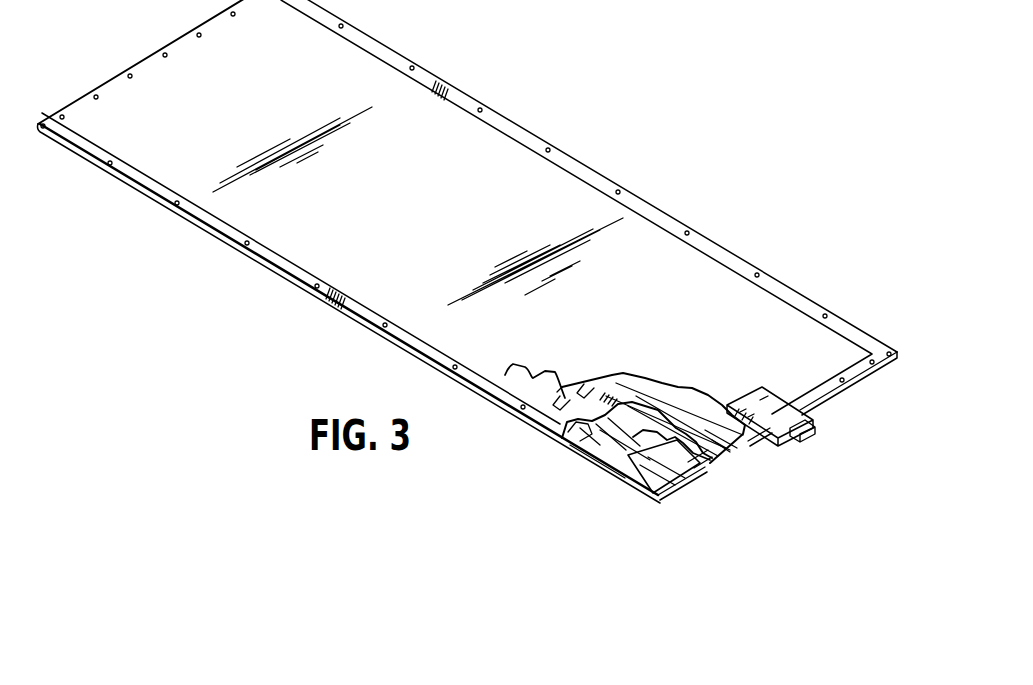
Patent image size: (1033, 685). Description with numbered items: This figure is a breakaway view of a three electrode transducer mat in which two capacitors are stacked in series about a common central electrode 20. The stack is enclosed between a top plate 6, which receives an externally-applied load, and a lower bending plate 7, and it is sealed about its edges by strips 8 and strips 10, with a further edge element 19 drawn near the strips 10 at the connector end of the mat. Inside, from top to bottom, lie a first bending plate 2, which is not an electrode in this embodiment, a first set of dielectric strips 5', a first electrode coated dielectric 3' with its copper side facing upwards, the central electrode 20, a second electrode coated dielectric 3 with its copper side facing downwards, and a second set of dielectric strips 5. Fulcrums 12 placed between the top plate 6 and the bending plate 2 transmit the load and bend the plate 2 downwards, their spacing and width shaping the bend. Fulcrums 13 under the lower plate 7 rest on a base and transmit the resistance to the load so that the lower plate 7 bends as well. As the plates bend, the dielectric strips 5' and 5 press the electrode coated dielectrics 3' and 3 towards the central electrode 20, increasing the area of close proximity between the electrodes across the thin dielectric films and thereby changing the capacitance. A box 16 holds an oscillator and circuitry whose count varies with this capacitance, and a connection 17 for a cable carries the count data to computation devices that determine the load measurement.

The first bending plate 2 is at (512, 365).
The second electrode coated dielectric 3 is at (606, 500).
The first electrode coated dielectric 3' is at (615, 471).
The second set of dielectric strips 5 is at (664, 547).
The first set of dielectric strips 5' is at (539, 453).
The top plate 6 is at (675, 271).
The lower bending plate 7 is at (685, 462).
The strips 8 is at (365, 312).
The strips 10 is at (745, 455).
The fulcrums 12 is at (598, 386).
The fulcrums 13 is at (690, 473).
The box 16 is at (778, 403).
The connection 17 is at (800, 432).
The rail 19 is at (737, 440).
The central electrode 20 is at (615, 445).